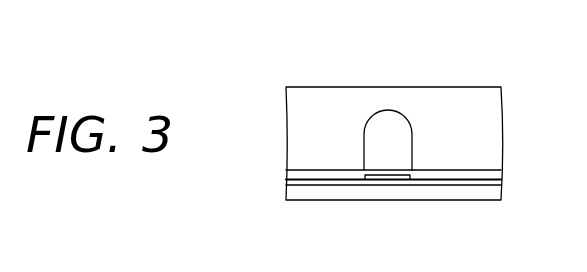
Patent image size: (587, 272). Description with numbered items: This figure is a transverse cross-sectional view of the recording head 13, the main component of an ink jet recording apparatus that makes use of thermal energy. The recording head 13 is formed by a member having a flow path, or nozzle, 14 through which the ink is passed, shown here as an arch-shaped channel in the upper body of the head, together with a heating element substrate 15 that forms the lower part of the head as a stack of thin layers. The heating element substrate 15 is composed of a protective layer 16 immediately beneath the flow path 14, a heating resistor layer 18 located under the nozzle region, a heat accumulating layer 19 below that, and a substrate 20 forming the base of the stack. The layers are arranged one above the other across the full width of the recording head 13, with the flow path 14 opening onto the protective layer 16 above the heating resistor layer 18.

The recording head 13 is at (318, 86).
The flow path (nozzle) 14 is at (389, 110).
The heating element substrate 15 is at (508, 165).
The protective layer 16 is at (463, 168).
The heating resistor layer 18 is at (414, 176).
The heat accumulating layer 19 is at (474, 183).
The substrate 20 is at (434, 193).